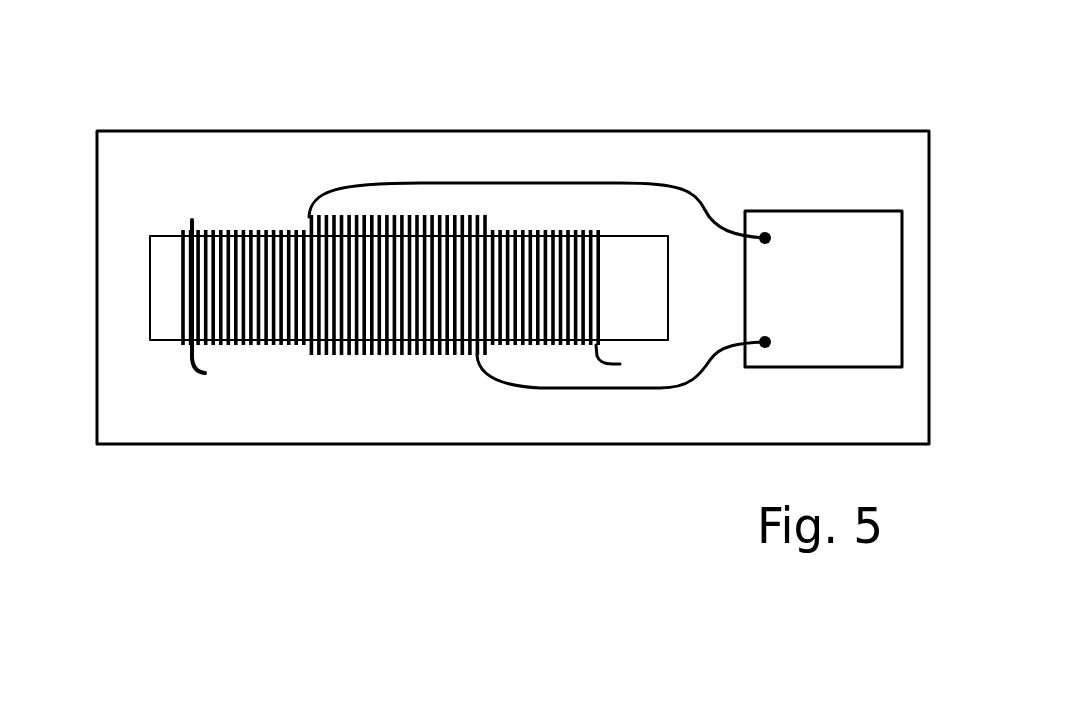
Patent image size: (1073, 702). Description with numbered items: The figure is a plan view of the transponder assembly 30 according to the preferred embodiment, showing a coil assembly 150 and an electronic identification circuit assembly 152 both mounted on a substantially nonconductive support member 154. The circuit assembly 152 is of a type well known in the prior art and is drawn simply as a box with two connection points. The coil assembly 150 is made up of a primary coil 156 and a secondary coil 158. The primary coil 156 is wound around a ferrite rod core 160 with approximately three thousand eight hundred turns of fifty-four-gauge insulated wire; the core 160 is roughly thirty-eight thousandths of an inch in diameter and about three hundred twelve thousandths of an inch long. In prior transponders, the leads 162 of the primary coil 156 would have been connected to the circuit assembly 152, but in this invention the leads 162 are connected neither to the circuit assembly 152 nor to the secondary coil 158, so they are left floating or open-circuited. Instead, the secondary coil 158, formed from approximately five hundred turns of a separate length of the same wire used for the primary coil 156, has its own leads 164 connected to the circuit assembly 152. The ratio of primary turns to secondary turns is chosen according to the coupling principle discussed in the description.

The transponder assembly 30 is at (955, 263).
The coil assembly 150 is at (192, 360).
The electronic identification circuit assembly 152 is at (852, 340).
The support member 154 is at (125, 145).
The primary coil 156 is at (260, 230).
The secondary coil 158 is at (440, 355).
The ferrite rod core 160 is at (160, 302).
The leads 162 is at (193, 220).
The leads 164 is at (705, 213).